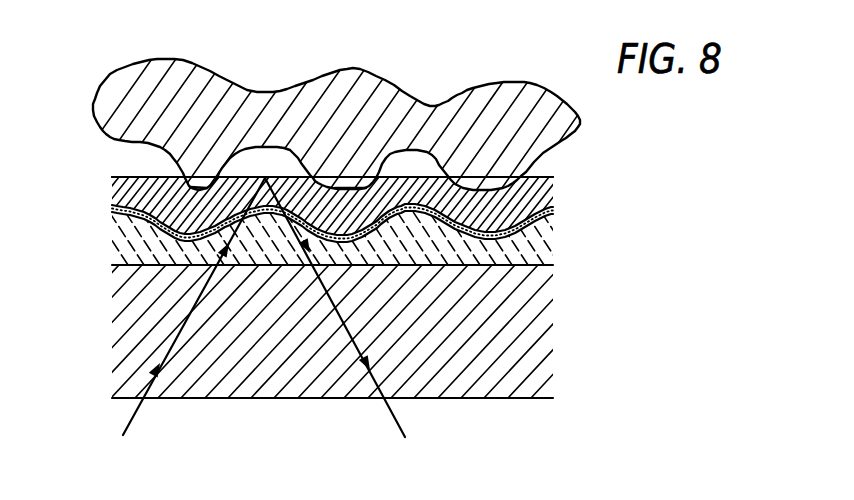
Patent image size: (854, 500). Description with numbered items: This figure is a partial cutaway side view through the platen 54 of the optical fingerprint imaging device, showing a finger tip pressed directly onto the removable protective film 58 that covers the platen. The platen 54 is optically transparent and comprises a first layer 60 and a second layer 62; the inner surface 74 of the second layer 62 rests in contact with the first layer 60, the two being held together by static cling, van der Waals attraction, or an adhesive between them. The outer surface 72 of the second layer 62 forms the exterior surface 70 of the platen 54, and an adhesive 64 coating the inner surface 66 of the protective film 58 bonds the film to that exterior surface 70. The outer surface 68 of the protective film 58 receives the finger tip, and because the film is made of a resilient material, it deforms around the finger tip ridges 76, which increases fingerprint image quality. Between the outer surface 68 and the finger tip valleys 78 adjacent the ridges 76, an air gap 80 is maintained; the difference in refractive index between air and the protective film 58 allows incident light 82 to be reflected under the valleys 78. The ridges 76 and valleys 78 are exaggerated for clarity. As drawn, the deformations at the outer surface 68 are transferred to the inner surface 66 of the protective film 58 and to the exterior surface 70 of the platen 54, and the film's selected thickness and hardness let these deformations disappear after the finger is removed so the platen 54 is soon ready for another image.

The platen 54 is at (638, 400).
The protective film 58 is at (583, 177).
The first layer 60 is at (583, 266).
The second layer 62 is at (583, 213).
The adhesive 64 is at (556, 208).
The inner surface 66 is at (123, 182).
The outer surface 68 is at (143, 179).
The exterior surface 70 is at (285, 223).
The outer surface 72 is at (146, 215).
The inner surface 74 is at (152, 265).
The ridges 76 is at (205, 188).
The finger tip valleys 78 is at (298, 83).
The air gap 80 is at (262, 152).
The incident light 82 is at (150, 386).